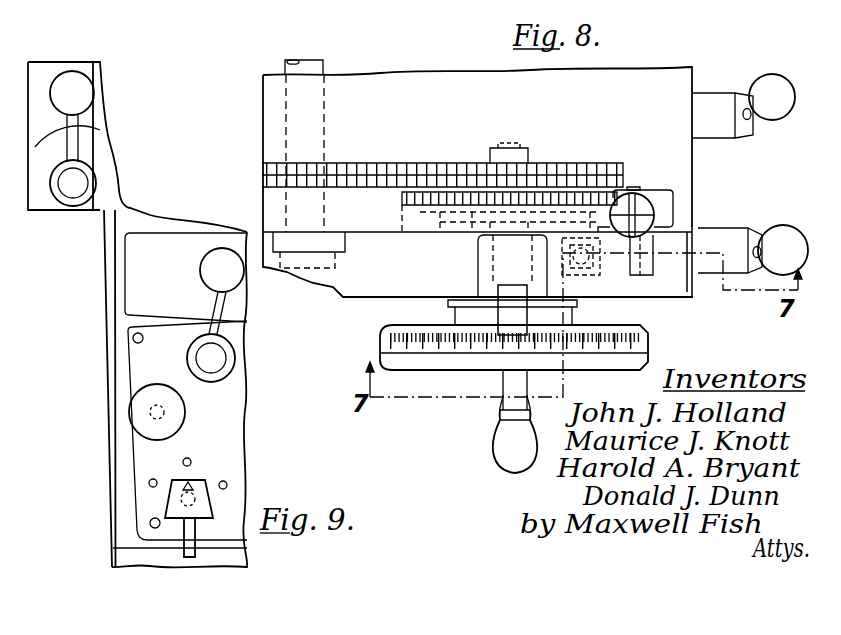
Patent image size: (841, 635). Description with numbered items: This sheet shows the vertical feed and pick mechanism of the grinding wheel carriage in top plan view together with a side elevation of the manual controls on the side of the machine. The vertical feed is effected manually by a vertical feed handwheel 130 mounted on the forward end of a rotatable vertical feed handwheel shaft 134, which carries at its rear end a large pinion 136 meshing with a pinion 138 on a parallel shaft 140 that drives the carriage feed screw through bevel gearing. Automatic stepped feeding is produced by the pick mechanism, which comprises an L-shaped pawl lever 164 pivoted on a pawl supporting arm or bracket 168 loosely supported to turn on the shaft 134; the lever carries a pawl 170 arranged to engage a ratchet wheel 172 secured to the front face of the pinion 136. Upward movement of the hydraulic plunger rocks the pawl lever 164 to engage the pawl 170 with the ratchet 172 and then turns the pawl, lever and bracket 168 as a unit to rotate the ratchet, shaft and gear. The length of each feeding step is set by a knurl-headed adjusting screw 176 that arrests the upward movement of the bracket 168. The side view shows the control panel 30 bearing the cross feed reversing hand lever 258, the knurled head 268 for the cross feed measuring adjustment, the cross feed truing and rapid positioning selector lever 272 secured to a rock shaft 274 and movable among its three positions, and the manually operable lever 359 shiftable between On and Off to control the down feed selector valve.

In FIG. 9, the control panel 30 is at (107, 310).
In FIG. 8, the vertical feed handwheel 130 is at (613, 358).
In FIG. 8, the vertical feed handwheel shaft 134 is at (508, 148).
In FIG. 8, the large pinion 136 is at (450, 157).
In FIG. 8, the pinion 138 is at (348, 164).
In FIG. 8, the parallel shaft 140 is at (308, 66).
In FIG. 8, the pawl lever 164 is at (642, 266).
In FIG. 8, the pawl supporting arm or bracket 168 is at (472, 236).
In FIG. 8, the pawl 170 is at (657, 192).
In FIG. 8, the ratchet wheel 172 is at (420, 210).
In FIG. 8, the knurl-headed adjusting screw 176 is at (645, 191).
In FIG. 8, the cross feed reversing hand lever 258 is at (757, 78).
In FIG. 9, the cross feed reversing hand lever 258 is at (211, 296).
In FIG. 9, the knurled head 268 is at (135, 405).
In FIG. 9, the cross feed truing and rapid positioning selector lever 272 is at (170, 500).
In FIG. 9, the rock shaft 274 is at (201, 505).
In FIG. 8, the manually operable lever 359 is at (735, 227).
In FIG. 9, the manually operable lever 359 is at (82, 100).